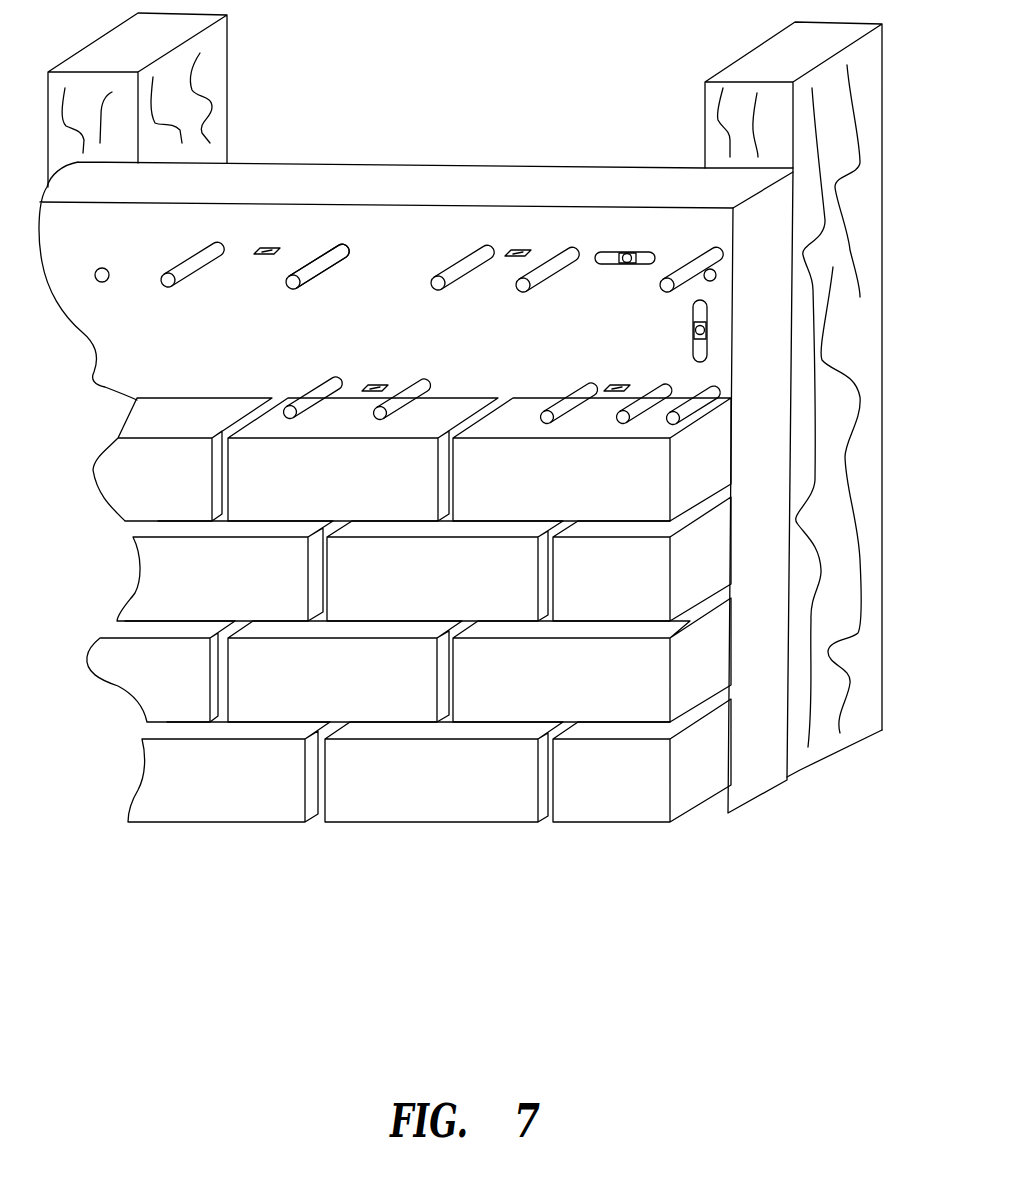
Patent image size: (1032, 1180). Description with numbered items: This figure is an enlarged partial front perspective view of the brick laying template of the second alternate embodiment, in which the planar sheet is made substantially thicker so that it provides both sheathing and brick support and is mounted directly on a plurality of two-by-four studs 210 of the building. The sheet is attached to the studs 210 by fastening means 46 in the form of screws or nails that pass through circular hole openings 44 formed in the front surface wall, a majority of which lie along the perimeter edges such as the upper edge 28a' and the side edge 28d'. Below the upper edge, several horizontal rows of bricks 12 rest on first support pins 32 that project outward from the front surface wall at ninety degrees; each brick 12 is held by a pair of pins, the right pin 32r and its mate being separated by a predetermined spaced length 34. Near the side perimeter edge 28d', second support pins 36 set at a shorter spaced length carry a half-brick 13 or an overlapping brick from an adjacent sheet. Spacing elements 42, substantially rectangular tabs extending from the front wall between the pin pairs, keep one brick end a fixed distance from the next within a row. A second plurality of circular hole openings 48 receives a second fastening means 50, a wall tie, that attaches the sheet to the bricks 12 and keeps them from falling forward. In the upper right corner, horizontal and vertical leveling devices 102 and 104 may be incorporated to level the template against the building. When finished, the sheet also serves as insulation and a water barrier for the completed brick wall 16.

The brick 12 is at (600, 675).
The half-brick 13 is at (618, 574).
The brick wall 16 is at (409, 650).
The outer perimeter edge 28a' is at (416, 267).
The side perimeter edge 28d' is at (778, 504).
The first support pin 32 is at (190, 266).
The right first support pin 32r is at (326, 256).
The spaced length 34 is at (288, 286).
The second support pin 36 is at (663, 421).
The spacing element 42 is at (267, 250).
The circular hole opening 44 is at (104, 268).
The fastening means 46 is at (95, 279).
The circular hole opening 48 is at (507, 408).
The second fastening means 50 is at (495, 408).
The horizontal leveling device 102 is at (638, 256).
The vertical leveling device 104 is at (707, 348).
The 2×4 stud 210 is at (200, 72).